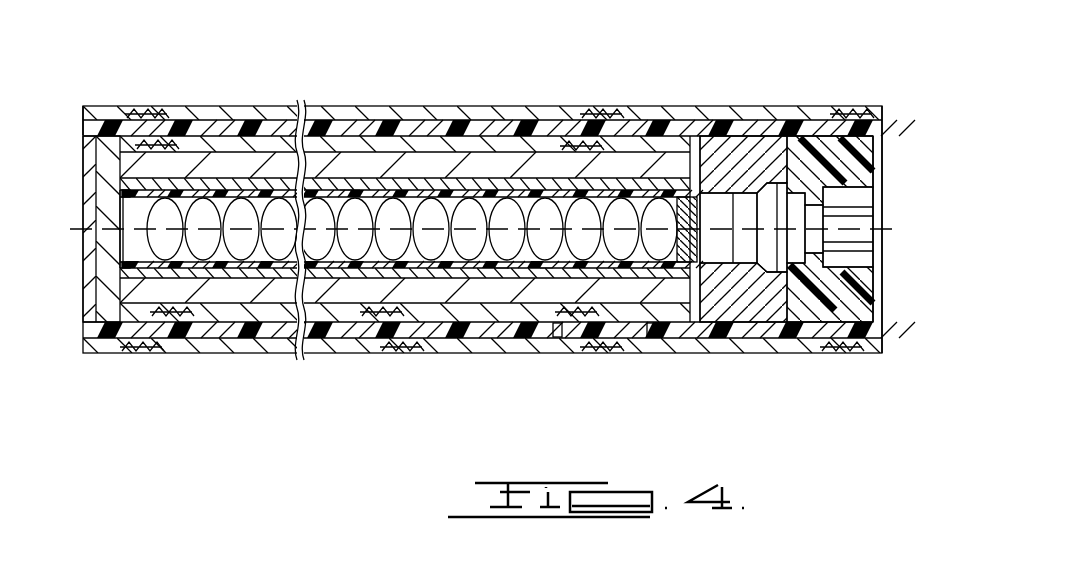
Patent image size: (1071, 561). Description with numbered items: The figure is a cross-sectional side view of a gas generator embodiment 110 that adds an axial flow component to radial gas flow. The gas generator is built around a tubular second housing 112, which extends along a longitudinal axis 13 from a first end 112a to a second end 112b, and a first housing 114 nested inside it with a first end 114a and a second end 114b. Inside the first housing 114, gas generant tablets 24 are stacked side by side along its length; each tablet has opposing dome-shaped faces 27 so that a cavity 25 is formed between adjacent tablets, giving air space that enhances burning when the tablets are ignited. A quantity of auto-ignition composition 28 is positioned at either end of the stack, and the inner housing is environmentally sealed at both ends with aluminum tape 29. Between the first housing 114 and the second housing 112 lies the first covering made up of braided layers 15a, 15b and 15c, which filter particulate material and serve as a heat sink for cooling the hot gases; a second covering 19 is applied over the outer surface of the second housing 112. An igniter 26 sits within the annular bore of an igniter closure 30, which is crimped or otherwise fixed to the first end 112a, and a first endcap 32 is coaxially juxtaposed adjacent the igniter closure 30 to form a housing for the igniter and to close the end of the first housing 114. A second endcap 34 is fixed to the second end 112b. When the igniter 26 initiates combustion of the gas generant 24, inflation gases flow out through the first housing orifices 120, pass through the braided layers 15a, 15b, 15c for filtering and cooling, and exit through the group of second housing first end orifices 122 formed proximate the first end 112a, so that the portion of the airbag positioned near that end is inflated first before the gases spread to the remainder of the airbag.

The longitudinal axis 13 is at (540, 222).
The first braided layer 15a is at (352, 279).
The second braided layer 15b is at (371, 288).
The third braided layer 15c is at (438, 314).
The second covering 19 is at (208, 350).
The gas generant tablets 24 is at (456, 212).
The cavity 25 is at (347, 193).
The igniter 26 is at (778, 200).
The dome-shaped faces 27 is at (500, 268).
The auto-ignition composition 28 is at (675, 195).
The aluminum tape 29 is at (128, 192).
The igniter closure 30 is at (845, 340).
The first endcap 32 is at (750, 300).
The second endcap 34 is at (84, 356).
The gas generator embodiment 110 is at (625, 66).
The second housing 112 is at (238, 352).
The first end of second housing 112a is at (846, 130).
The second end of second housing 112b is at (99, 134).
The first housing 114 is at (541, 266).
The first end of first housing 114a is at (690, 322).
The second end of first housing 114b is at (156, 345).
The first housing orifices 120 is at (240, 190).
The second housing first end orifices 122 is at (640, 352).